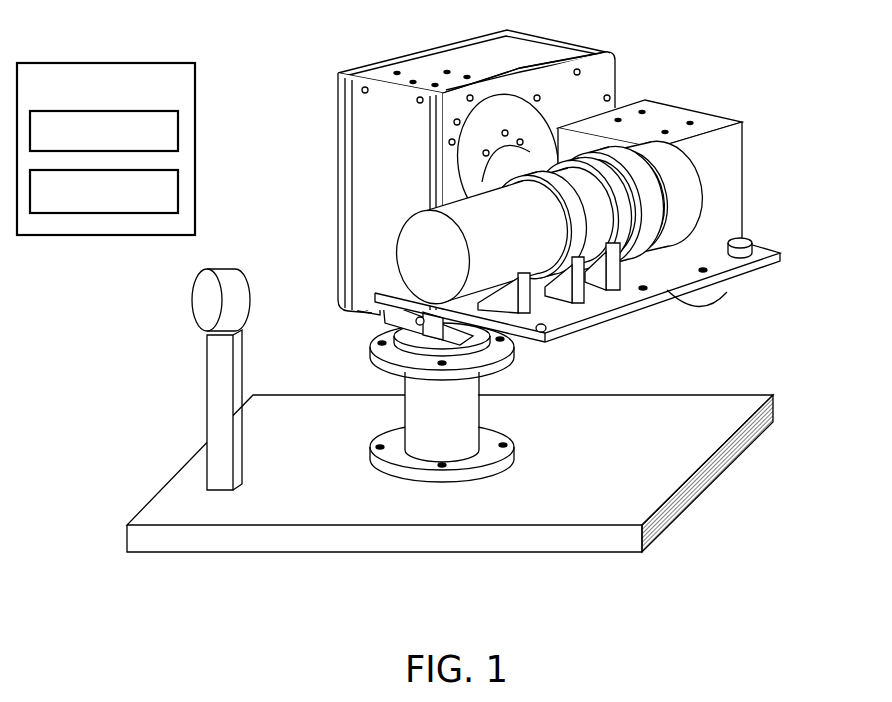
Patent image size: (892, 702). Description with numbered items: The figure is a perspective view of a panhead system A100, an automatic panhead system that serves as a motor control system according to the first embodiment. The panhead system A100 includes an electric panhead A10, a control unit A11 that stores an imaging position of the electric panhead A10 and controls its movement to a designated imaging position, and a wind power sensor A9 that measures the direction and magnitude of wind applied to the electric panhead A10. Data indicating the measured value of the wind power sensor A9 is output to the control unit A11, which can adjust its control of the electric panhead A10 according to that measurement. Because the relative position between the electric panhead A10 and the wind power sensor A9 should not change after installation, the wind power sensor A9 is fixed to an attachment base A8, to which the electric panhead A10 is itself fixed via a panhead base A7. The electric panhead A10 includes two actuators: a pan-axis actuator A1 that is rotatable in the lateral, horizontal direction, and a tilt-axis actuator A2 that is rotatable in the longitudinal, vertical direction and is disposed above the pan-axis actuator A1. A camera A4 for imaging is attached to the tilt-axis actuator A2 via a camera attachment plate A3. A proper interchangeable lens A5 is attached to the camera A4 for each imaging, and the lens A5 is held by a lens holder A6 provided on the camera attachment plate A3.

The panhead system A100 is at (856, 32).
The pan-axis actuator A1 is at (372, 298).
The tilt-axis actuator A2 is at (522, 122).
The camera attachment plate A3 is at (693, 292).
The camera A4 is at (632, 132).
The lens A5 is at (582, 207).
The lens holder A6 is at (556, 335).
The panhead base A7 is at (417, 437).
The attachment base A8 is at (672, 445).
The wind power sensor A9 is at (206, 310).
The electric panhead A10 is at (336, 175).
The control unit A11 is at (106, 149).